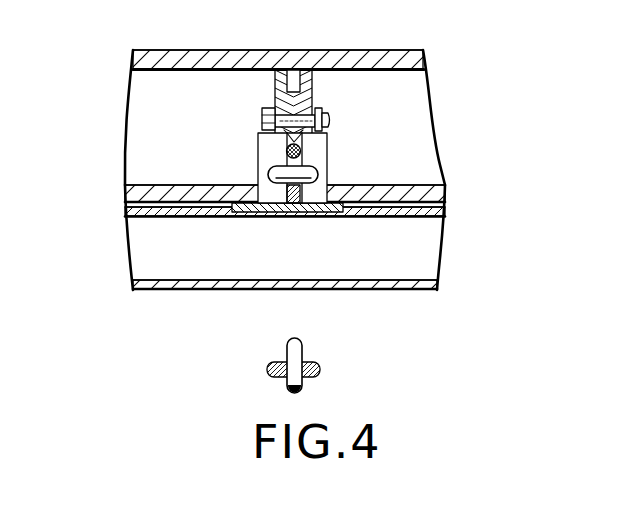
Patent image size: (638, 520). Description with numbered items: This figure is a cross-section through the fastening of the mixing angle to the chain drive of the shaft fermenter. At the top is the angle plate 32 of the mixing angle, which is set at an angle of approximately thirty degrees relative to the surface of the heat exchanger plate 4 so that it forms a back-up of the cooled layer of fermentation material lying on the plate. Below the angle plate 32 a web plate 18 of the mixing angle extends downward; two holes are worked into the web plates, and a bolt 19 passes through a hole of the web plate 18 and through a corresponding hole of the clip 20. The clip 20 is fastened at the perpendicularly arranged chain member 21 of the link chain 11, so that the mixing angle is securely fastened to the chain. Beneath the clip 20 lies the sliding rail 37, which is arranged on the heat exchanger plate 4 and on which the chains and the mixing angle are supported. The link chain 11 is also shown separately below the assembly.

The heat exchanger plate 4 is at (432, 269).
The link chain 11 is at (303, 345).
The web plate 18 is at (283, 75).
The bolt 19 is at (262, 118).
The clip 20 is at (303, 138).
The chain member 21 is at (287, 153).
The angle plate 32 is at (405, 50).
The sliding rail 37 is at (338, 214).